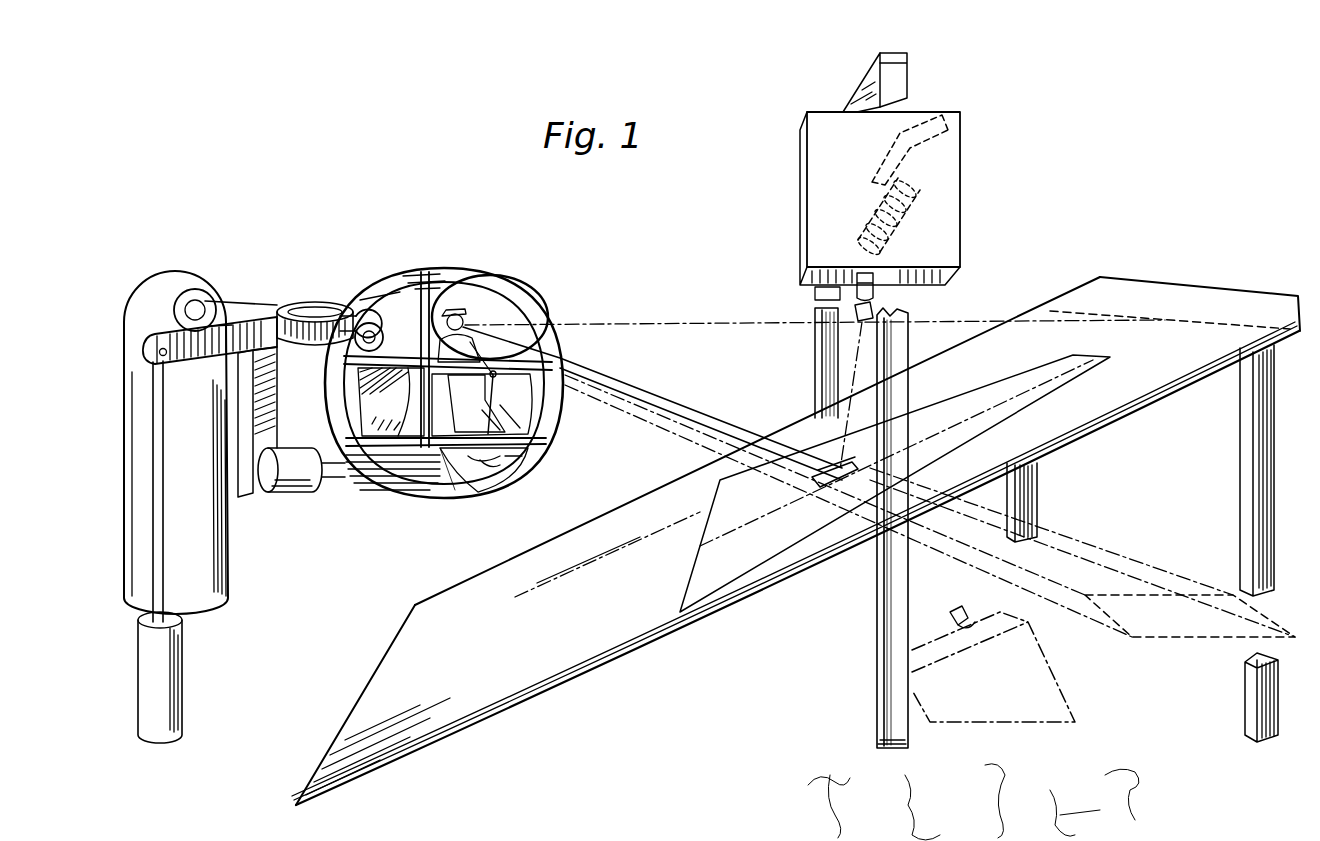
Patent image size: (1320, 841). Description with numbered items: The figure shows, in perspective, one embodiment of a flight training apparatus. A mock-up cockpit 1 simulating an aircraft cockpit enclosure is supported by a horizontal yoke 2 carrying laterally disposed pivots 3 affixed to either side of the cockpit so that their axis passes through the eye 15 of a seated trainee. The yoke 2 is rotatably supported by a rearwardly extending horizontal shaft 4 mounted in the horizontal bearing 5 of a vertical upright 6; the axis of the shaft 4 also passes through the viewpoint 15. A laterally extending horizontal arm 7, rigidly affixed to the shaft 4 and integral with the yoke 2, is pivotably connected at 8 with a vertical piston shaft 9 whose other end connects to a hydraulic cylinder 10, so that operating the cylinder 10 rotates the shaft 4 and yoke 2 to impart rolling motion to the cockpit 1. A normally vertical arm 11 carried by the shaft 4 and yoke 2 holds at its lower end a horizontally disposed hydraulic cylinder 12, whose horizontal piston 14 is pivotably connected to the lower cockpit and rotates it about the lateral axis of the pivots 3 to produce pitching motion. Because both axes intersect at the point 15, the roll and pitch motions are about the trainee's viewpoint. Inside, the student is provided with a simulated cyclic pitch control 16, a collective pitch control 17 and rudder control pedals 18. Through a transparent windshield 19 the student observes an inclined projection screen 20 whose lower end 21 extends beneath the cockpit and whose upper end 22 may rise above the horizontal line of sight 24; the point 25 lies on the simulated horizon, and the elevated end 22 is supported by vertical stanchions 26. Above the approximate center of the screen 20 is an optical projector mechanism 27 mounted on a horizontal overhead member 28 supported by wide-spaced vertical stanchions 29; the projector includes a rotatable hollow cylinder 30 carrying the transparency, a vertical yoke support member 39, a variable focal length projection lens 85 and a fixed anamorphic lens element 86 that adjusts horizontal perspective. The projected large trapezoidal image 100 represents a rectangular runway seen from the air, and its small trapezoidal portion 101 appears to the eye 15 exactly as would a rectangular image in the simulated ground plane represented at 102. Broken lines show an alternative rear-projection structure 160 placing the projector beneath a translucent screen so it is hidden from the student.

The mock-up cockpit 1 is at (515, 277).
The horizontal yoke 2 is at (300, 342).
The laterally disposed pivots 3 is at (373, 343).
The horizontal shaft 4 is at (228, 304).
The horizontal bearing 5 is at (193, 290).
The vertical upright 6 is at (222, 556).
The horizontal arm 7 is at (200, 354).
The pivotal connection 8 is at (165, 357).
The vertical piston shaft 9 is at (157, 483).
The hydraulic cylinder 10 is at (177, 656).
The vertical arm 11 is at (268, 427).
The hydraulic cylinder 12 is at (297, 491).
The horizontal piston 14 is at (340, 480).
The eye of the trainee 15 is at (463, 323).
The simulated cyclic pitch control 16 is at (495, 411).
The collective pitch control 17 is at (497, 380).
The rudder control pedals 18 is at (460, 497).
The transparent windshield 19 is at (565, 342).
The inclined projection screen 20 is at (606, 655).
The lower end of screen 21 is at (383, 660).
The upper end of screen 22 is at (1196, 284).
The horizontal line of sight 24 is at (674, 322).
The horizon point 25 is at (1166, 322).
The vertical stanchions 26 is at (1037, 492).
The optical projector mechanism 27 is at (806, 168).
The horizontal overhead member 28 is at (853, 84).
The vertical stanchions 29 is at (815, 350).
The hollow cylinder 30 is at (912, 212).
The vertical yoke support member 39 is at (942, 146).
The variable focal length projection lens 85 is at (878, 286).
The anamorphic lens element 86 is at (856, 386).
The trapezoidal image 100 is at (685, 575).
The trapezoidal portion of image 101 is at (818, 482).
The rectangular image in ground plane 102 is at (1175, 638).
The rear projection structure 160 is at (1058, 701).